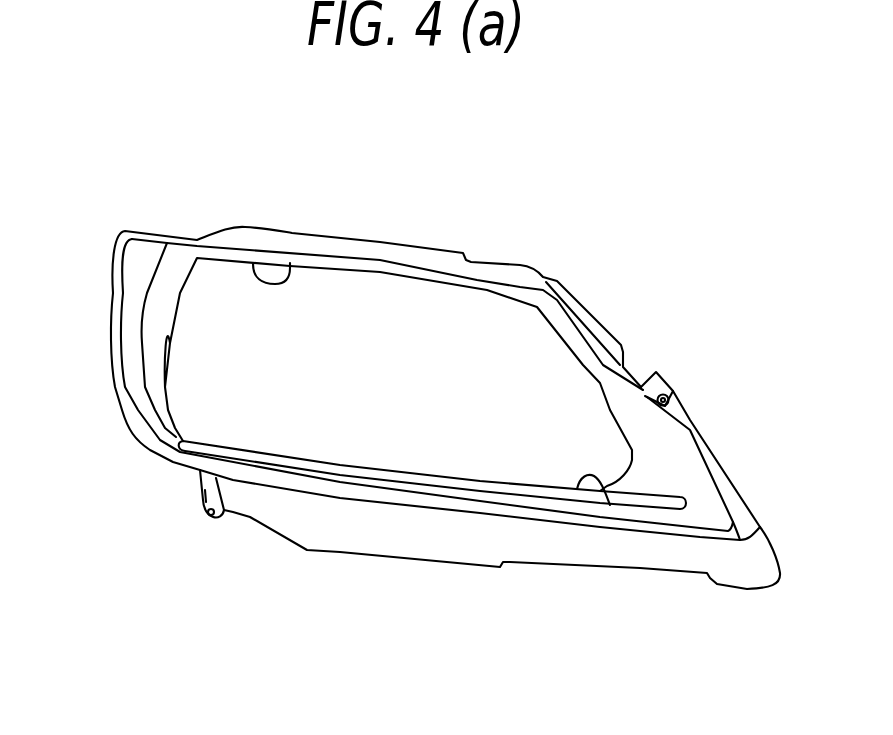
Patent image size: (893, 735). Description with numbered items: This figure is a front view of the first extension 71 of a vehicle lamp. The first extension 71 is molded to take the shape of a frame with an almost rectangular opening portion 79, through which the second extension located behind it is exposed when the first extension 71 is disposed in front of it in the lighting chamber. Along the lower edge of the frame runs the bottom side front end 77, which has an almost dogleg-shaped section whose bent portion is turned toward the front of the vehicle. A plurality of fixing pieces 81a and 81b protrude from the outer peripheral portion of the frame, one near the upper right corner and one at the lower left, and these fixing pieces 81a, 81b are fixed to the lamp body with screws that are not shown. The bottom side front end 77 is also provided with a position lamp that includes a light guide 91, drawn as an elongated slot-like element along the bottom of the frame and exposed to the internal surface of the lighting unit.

The first extension 71 is at (445, 408).
The opening portion 79 is at (290, 263).
The fixing piece 81a is at (670, 385).
The fixing piece 81b is at (201, 516).
The bottom side front end 77 is at (576, 484).
The light guide 91 is at (677, 500).